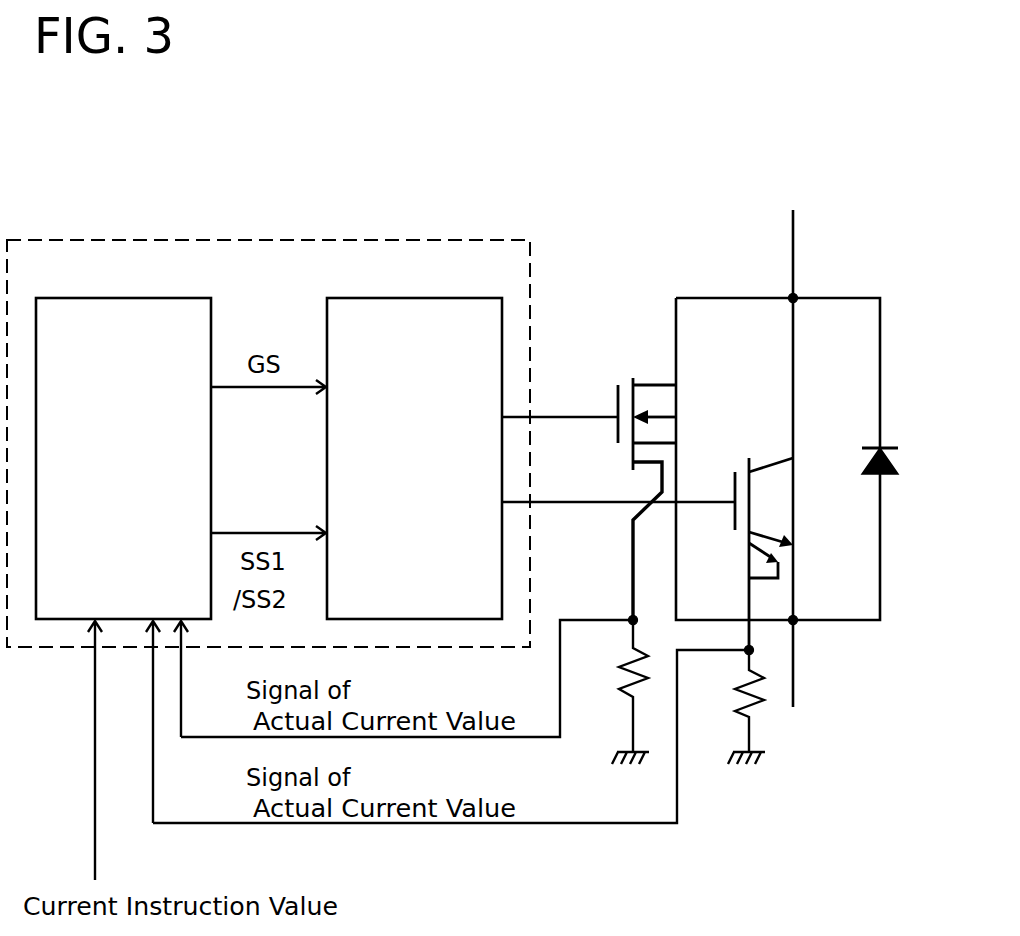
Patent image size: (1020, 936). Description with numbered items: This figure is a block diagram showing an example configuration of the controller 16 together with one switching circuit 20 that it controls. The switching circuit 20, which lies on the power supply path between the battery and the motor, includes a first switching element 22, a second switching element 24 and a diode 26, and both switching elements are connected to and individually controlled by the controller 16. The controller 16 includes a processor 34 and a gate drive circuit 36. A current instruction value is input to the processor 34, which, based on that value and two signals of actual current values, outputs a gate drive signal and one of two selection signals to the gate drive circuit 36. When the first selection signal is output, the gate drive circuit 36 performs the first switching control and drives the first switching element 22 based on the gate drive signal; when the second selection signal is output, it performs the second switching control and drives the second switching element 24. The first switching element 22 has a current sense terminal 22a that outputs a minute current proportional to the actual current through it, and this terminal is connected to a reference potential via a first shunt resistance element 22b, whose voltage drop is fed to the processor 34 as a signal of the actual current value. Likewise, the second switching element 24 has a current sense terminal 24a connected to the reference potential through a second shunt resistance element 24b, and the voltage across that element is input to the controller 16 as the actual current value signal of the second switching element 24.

The controller 16 is at (512, 240).
The switching circuit 20 is at (761, 252).
The first switching element 22 is at (624, 446).
The current sense terminal 22a is at (643, 463).
The first shunt resistance element 22b is at (622, 690).
The second switching element 24 is at (786, 580).
The current sense terminal 24a is at (768, 562).
The second shunt resistance element 24b is at (750, 711).
The diode 26 is at (880, 448).
The processor 34 is at (100, 298).
The gate drive circuit 36 is at (456, 298).